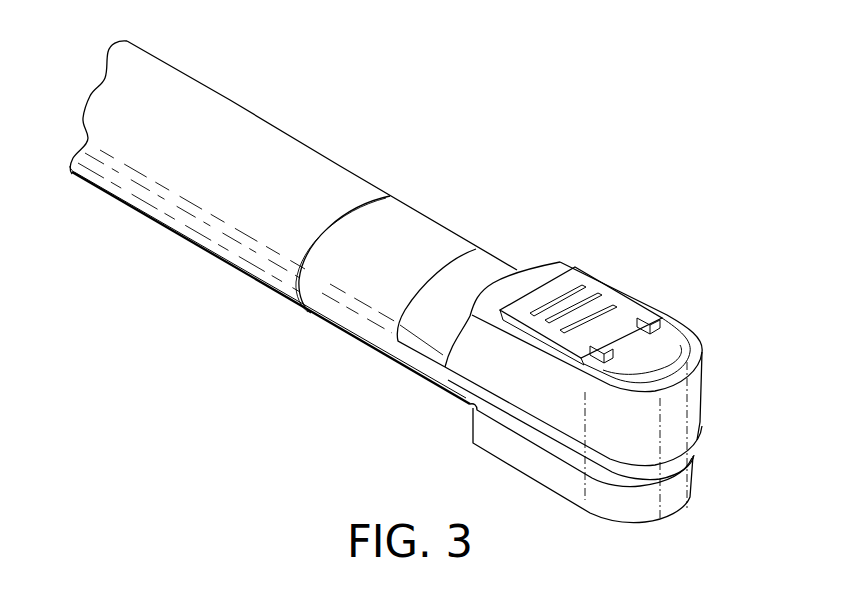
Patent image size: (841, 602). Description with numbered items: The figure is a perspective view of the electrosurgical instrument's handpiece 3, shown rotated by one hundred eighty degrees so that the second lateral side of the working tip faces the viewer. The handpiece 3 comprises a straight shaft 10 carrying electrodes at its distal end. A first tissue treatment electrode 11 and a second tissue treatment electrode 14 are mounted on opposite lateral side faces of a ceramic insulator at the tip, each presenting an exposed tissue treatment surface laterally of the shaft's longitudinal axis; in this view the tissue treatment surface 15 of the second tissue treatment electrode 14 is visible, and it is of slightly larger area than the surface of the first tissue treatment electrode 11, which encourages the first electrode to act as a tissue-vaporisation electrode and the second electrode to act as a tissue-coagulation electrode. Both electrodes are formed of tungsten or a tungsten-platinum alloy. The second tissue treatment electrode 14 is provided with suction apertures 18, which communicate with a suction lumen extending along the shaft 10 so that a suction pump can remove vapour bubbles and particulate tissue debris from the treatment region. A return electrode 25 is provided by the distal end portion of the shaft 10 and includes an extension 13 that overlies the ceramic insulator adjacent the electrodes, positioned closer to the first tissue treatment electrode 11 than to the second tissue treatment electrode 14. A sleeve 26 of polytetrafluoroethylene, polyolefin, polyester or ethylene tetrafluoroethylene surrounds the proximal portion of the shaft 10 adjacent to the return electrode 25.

The handpiece 3 is at (407, 277).
The shaft 10 is at (293, 222).
The first tissue treatment electrode 11 is at (547, 476).
The extension 13 is at (581, 375).
The second tissue treatment electrode 14 is at (661, 377).
The tissue treatment surface 15 is at (581, 297).
The suction apertures 18 is at (589, 292).
The return electrode 25 is at (347, 333).
The sleeve 26 is at (186, 245).